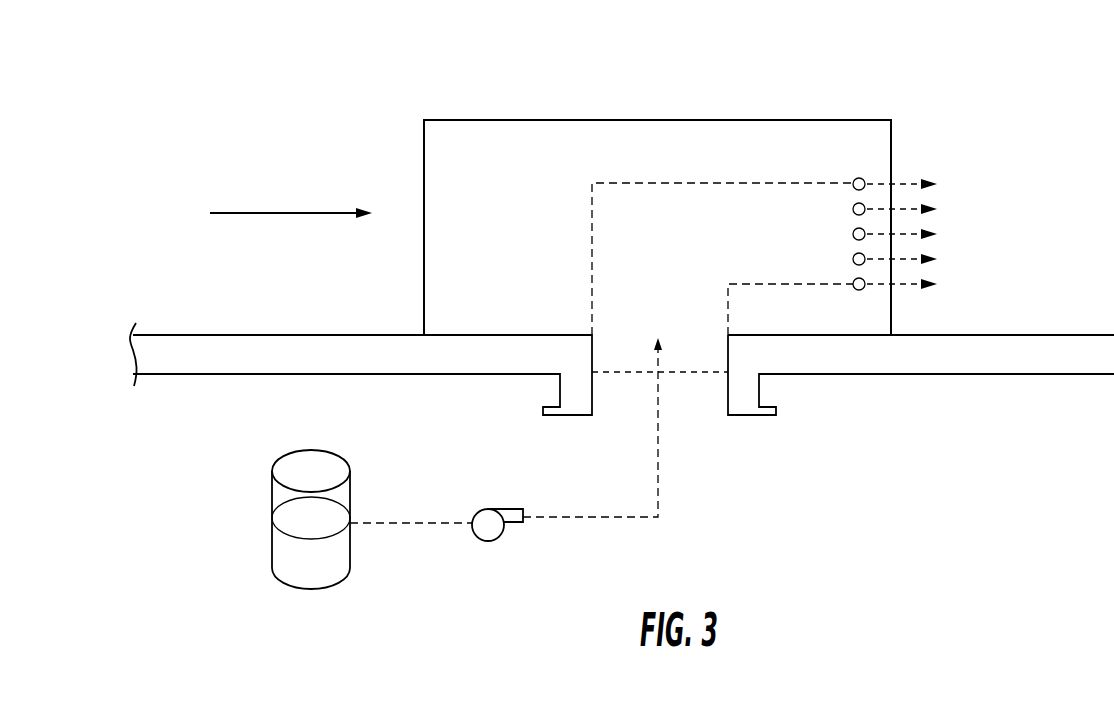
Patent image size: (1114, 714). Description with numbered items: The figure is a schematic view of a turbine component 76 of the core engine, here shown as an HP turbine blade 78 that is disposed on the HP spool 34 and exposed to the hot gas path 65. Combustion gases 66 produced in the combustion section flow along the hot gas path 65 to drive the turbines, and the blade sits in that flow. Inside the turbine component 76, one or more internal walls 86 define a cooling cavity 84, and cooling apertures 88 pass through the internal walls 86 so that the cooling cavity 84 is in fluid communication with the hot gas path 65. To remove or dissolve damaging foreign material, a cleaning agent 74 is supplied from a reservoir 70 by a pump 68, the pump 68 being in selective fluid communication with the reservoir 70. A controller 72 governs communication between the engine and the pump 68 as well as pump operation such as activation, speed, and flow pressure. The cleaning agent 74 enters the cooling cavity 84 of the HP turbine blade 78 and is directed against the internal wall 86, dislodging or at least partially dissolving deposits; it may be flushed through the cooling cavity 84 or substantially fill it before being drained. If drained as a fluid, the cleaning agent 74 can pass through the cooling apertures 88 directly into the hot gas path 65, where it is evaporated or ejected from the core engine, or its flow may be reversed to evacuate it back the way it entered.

The HP spool 34 is at (1017, 347).
The hot gas path 65 is at (195, 284).
The combustion gases 66 is at (268, 213).
The pump 68 is at (497, 539).
The reservoir 70 is at (271, 515).
The controller 72 is at (502, 510).
The cleaning agent 74 is at (657, 432).
The turbine component 76 is at (495, 120).
The HP turbine blade 78 is at (495, 120).
The cooling cavity 84 is at (742, 276).
The internal wall 86 is at (590, 265).
The cooling apertures 88 is at (851, 168).